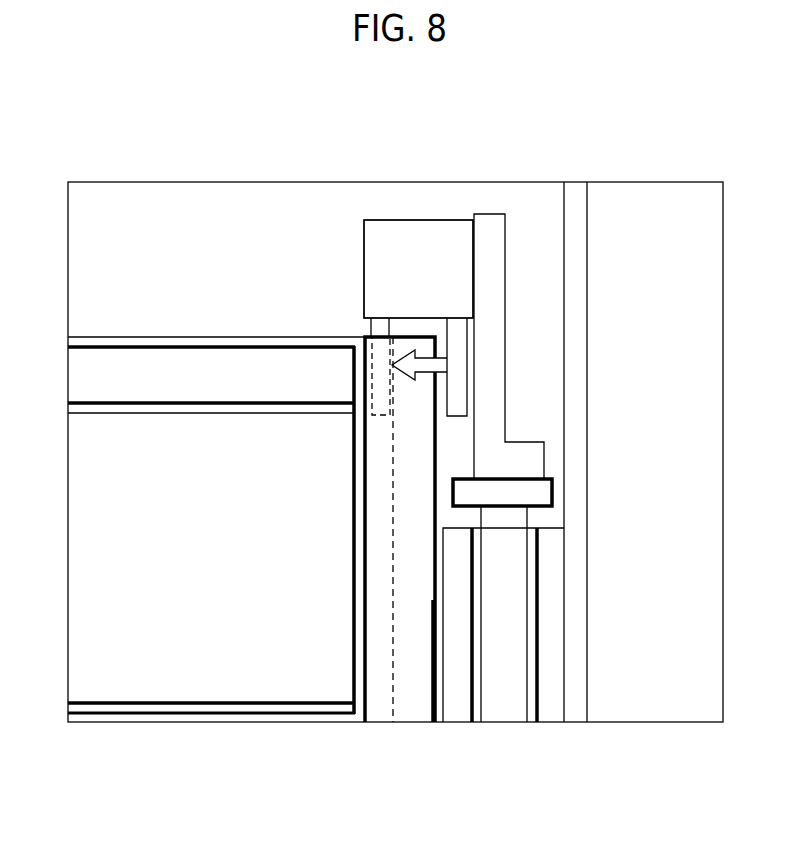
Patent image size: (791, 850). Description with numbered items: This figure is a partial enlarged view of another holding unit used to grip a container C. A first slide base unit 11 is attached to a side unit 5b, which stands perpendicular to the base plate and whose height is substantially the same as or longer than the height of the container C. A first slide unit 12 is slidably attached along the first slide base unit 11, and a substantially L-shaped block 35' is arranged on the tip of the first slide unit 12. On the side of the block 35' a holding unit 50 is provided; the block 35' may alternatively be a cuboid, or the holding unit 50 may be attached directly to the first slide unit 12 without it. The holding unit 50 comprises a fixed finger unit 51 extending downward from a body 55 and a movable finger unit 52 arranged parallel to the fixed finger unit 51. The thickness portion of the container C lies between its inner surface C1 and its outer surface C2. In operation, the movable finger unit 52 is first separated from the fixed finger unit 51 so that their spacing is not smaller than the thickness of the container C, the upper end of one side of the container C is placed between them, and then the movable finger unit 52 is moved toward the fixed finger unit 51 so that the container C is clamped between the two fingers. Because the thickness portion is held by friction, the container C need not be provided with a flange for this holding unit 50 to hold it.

The side unit 5b is at (574, 277).
The first slide base unit 11 is at (550, 618).
The first slide unit 12 is at (535, 490).
The block 35' is at (569, 346).
The holding unit 50 is at (343, 240).
The fixed finger unit 51 is at (370, 383).
The movable finger unit 52 is at (455, 400).
The body 55 is at (401, 243).
The container C is at (146, 322).
The inner surface C1 is at (393, 690).
The outer surface C2 is at (433, 690).